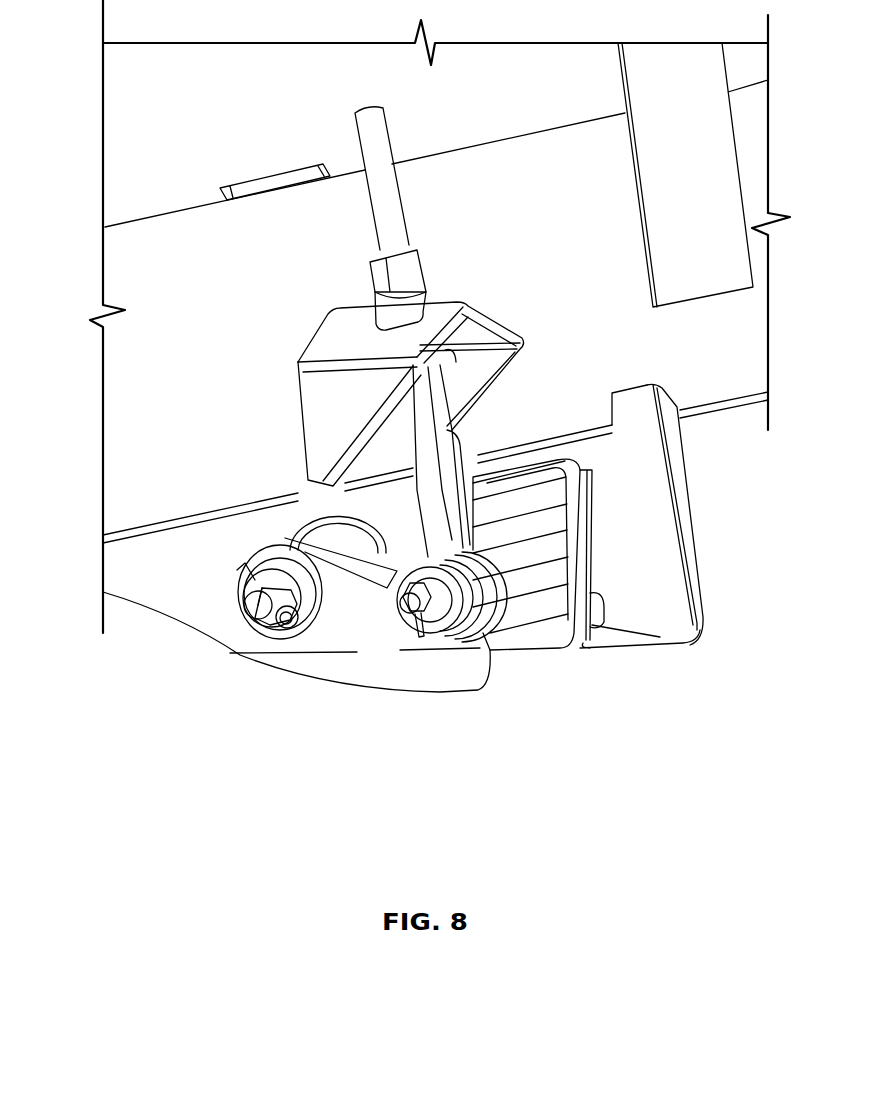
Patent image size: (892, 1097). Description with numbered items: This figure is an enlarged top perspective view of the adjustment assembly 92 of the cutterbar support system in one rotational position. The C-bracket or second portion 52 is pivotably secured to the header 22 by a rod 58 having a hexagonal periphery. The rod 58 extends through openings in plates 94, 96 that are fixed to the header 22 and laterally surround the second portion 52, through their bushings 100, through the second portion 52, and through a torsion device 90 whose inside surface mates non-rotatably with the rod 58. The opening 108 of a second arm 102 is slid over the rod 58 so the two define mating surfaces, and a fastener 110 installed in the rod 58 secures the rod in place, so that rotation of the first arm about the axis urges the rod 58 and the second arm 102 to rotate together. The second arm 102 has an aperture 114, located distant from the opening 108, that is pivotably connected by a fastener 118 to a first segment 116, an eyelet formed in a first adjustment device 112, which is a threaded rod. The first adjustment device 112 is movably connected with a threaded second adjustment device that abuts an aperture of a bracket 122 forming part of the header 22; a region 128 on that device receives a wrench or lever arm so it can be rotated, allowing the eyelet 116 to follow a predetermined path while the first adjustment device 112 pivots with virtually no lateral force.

The header 22 is at (210, 119).
The second portion 52 is at (597, 595).
The rod 58 is at (257, 608).
The torsion device 90 is at (522, 647).
The adjustment assembly 92 is at (338, 712).
The plate 94 is at (690, 500).
The plate 96 is at (287, 673).
The bushing 100 is at (302, 538).
The second arm 102 is at (277, 557).
The opening 108 is at (270, 614).
The fastener 110 is at (283, 630).
The first adjustment device 112 is at (432, 493).
The aperture 114 is at (432, 630).
The first segment 116 is at (433, 513).
The fastener 118 is at (407, 607).
The bracket 122 is at (527, 338).
The region 128 is at (405, 283).